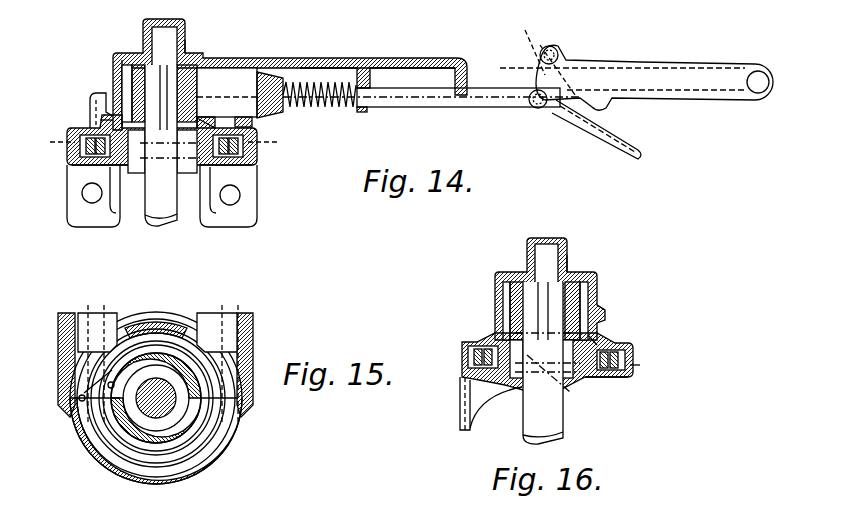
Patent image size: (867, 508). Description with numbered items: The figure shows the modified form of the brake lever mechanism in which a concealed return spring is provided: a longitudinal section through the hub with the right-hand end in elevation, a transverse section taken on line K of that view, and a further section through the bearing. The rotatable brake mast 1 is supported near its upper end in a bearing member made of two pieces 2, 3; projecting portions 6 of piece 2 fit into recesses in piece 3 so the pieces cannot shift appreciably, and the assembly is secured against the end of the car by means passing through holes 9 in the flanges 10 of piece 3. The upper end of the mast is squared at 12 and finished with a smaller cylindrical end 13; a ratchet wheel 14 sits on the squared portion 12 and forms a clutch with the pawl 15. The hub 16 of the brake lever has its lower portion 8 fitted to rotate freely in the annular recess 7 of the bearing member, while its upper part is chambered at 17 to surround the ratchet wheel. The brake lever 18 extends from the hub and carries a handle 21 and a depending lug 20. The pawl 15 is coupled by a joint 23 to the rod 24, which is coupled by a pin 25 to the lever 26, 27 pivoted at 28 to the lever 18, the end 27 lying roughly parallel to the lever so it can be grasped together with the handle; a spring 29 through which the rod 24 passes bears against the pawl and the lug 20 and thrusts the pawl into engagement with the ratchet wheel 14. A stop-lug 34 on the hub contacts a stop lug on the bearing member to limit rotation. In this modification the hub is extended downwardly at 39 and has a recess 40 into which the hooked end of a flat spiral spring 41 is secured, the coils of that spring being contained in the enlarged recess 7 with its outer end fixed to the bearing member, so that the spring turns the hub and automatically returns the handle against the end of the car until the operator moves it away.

In FIG. 14, the brake mast 1 is at (170, 145).
In FIG. 15, the brake mast 1 is at (160, 395).
In FIG. 16, the brake mast 1 is at (547, 363).
In FIG. 14, the bearing piece 2 is at (84, 130).
In FIG. 15, the bearing piece 2 is at (155, 320).
In FIG. 16, the bearing piece 2 is at (470, 345).
In FIG. 14, the bearing piece 3 is at (111, 210).
In FIG. 15, the bearing piece 3 is at (212, 458).
In FIG. 16, the bearing piece 3 is at (488, 402).
In FIG. 15, the projecting portions 6 is at (58, 330).
In FIG. 16, the projecting portions 6 is at (566, 387).
In FIG. 15, the annular recess 7 is at (100, 445).
In FIG. 16, the annular recess 7 is at (626, 356).
In FIG. 14, the lower portion of the hub 8 is at (208, 122).
In FIG. 16, the lower portion of the hub 8 is at (596, 342).
In FIG. 14, the holes 9 is at (90, 203).
In FIG. 15, the holes 9 is at (96, 315).
In FIG. 16, the holes 9 is at (464, 408).
In FIG. 14, the flanges 10 is at (70, 200).
In FIG. 15, the flanges 10 is at (62, 313).
In FIG. 16, the flanges 10 is at (460, 390).
In FIG. 14, the squared upper end of the brake mast 12 is at (115, 56).
In FIG. 16, the squared upper end of the brake mast 12 is at (533, 305).
In FIG. 14, the cylindrical end 13 is at (156, 32).
In FIG. 16, the cylindrical end 13 is at (549, 248).
In FIG. 14, the ratchet wheel 14 is at (134, 82).
In FIG. 16, the ratchet wheel 14 is at (508, 290).
In FIG. 14, the pawl 15 is at (222, 82).
In FIG. 14, the hub of the brake lever 16 is at (128, 56).
In FIG. 16, the hub of the brake lever 16 is at (512, 273).
In FIG. 14, the chamber 17 is at (108, 117).
In FIG. 14, the brake lever 18 is at (394, 60).
In FIG. 14, the lug 20 is at (361, 112).
In FIG. 14, the handle 21 is at (672, 70).
In FIG. 14, the joint 23 is at (272, 88).
In FIG. 14, the rod 24 is at (445, 92).
In FIG. 14, the pin 25 is at (537, 109).
In FIG. 14, the lever 26 is at (543, 54).
In FIG. 14, the lever end 27 is at (642, 155).
In FIG. 14, the pivot 28 is at (554, 50).
In FIG. 14, the spring 29 is at (335, 88).
In FIG. 16, the stop-lug 34 is at (603, 312).
In FIG. 14, the downward extension of the hub 39 is at (85, 167).
In FIG. 15, the downward extension of the hub 39 is at (140, 440).
In FIG. 16, the downward extension of the hub 39 is at (590, 380).
In FIG. 15, the recess 40 is at (92, 402).
In FIG. 14, the spiral spring 41 is at (255, 162).
In FIG. 15, the spiral spring 41 is at (225, 430).
In FIG. 16, the spiral spring 41 is at (468, 360).
In FIG. 14, the section line K— K is at (164, 145).